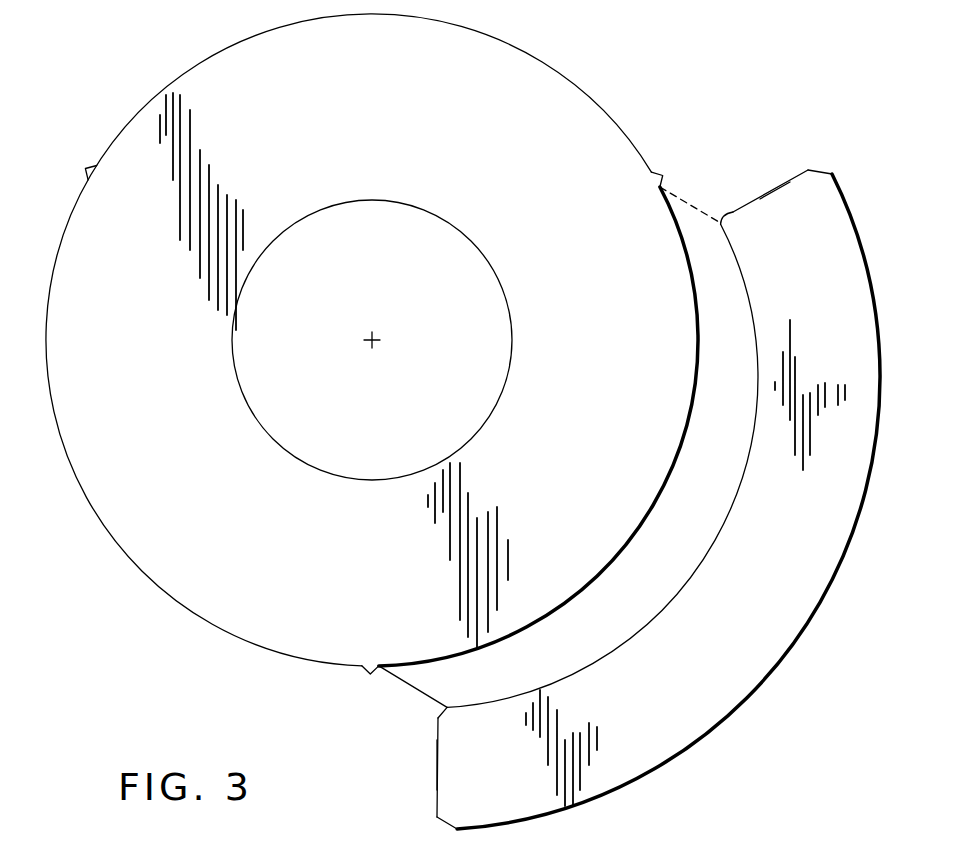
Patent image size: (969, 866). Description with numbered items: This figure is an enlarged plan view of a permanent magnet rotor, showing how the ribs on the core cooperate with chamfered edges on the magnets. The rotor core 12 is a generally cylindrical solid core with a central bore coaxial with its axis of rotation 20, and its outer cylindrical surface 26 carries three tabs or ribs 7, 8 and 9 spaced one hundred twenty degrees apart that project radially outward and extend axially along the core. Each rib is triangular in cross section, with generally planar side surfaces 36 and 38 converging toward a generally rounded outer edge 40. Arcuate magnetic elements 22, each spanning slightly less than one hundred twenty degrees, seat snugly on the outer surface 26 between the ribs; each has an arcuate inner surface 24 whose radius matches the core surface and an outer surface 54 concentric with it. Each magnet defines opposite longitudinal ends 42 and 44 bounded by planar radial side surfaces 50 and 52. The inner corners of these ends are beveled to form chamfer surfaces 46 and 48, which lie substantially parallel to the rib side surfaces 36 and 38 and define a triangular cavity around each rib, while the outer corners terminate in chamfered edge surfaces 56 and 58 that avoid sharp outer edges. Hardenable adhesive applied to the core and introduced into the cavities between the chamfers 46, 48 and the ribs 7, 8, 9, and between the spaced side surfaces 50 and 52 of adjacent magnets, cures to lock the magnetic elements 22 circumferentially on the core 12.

The rib 7 is at (376, 666).
The rib 8 is at (93, 177).
The rib 9 is at (657, 177).
The rotor core 12 is at (540, 92).
The central axis 20 is at (375, 338).
The magnetic element 22 is at (621, 480).
The arcuate inner surface 24 is at (717, 538).
The outer surface 26 is at (650, 510).
The planar side surface 36 is at (375, 421).
The planar side surface 38 is at (376, 409).
The notch side wall 40 is at (374, 426).
The longitudinal end 42 is at (413, 767).
The longitudinal end 44 is at (758, 212).
The chamfer surface 46 is at (443, 712).
The chamfer surface 48 is at (722, 226).
The radial side surface 50 is at (437, 758).
The radial side surface 52 is at (778, 187).
The outer surface 54 is at (793, 653).
The chamfered edge surface 56 is at (443, 822).
The chamfered edge surface 58 is at (817, 171).